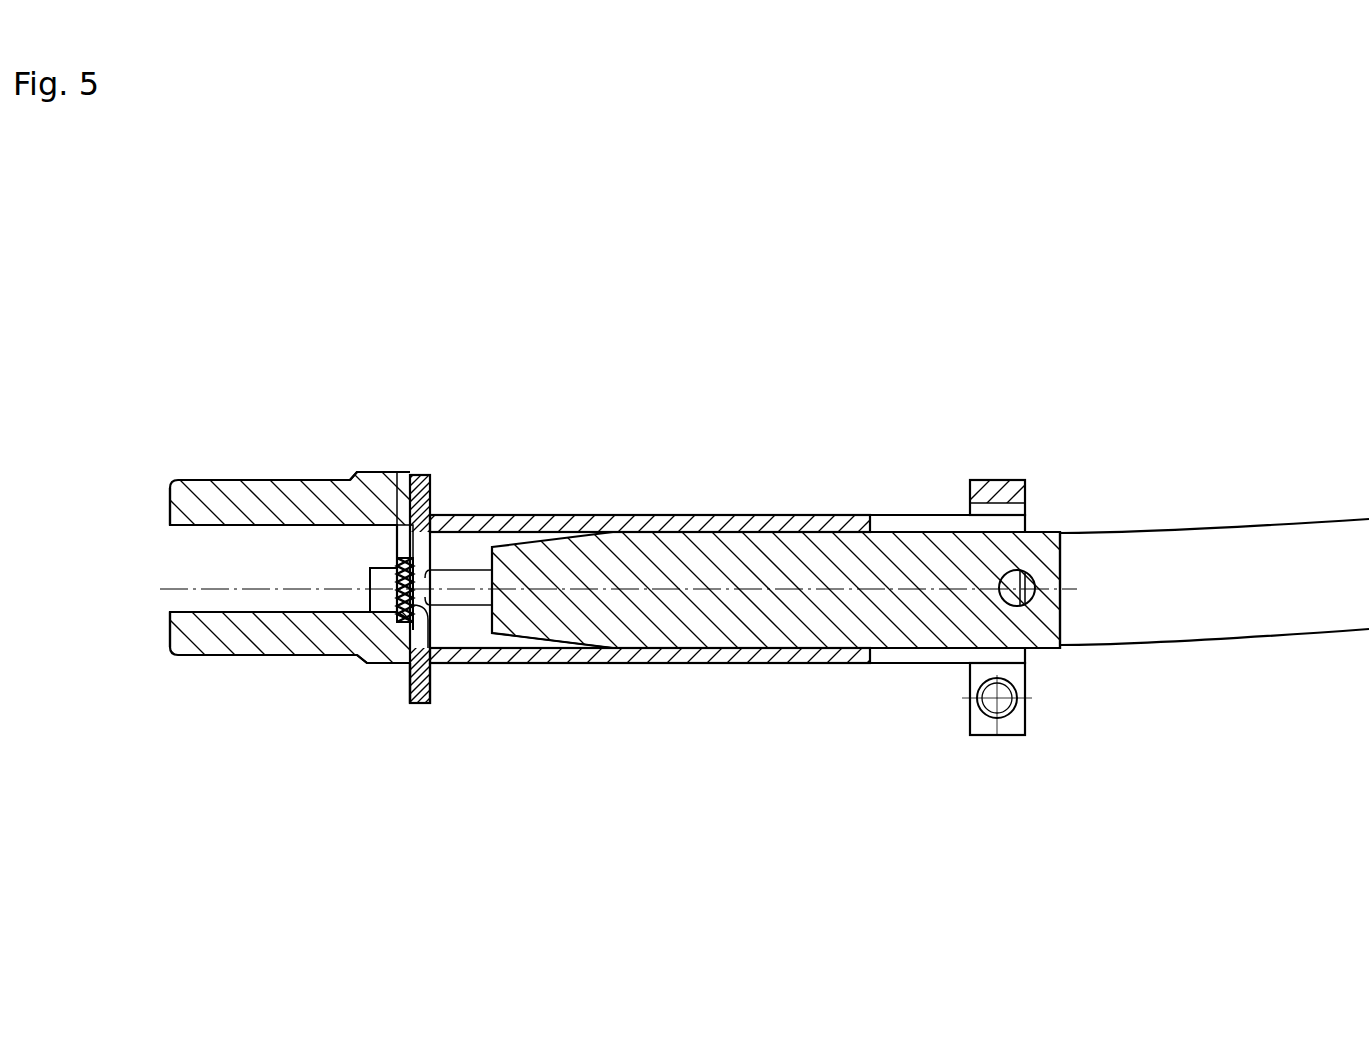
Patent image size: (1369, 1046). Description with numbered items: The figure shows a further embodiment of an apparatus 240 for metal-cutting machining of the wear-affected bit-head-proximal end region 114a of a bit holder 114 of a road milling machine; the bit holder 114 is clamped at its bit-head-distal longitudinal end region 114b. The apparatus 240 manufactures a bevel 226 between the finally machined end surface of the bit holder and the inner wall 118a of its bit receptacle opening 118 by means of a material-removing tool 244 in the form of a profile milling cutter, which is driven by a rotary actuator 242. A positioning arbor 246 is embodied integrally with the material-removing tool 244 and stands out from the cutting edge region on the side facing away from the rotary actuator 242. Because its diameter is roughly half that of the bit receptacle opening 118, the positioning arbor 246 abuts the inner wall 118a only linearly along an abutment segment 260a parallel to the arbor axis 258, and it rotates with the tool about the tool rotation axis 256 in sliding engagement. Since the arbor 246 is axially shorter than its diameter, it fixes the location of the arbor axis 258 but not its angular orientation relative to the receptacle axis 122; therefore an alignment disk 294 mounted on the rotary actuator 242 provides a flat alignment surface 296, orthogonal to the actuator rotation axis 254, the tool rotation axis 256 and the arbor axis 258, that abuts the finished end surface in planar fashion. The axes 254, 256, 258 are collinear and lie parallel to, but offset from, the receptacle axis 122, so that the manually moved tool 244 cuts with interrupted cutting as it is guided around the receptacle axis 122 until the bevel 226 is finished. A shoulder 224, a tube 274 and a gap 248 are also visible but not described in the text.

The bit holder 114 is at (280, 463).
The bit-head-proximal end region 114a is at (388, 683).
The bit-head-distal longitudinal end region 114b is at (160, 668).
The bit receptacle opening 118 is at (152, 537).
The inner wall 118a is at (203, 556).
The receptacle axis 122 is at (187, 570).
The shoulder 224 is at (388, 470).
The bevel 226 is at (417, 548).
The apparatus 240 is at (657, 355).
The rotary actuator 242 is at (882, 570).
The material-removing tool 244 is at (423, 632).
The positioning arbor 246 is at (380, 560).
The gap 248 is at (480, 622).
The actuator rotation axis 254 is at (746, 668).
The tool rotation axis 256 is at (782, 595).
The arbor axis 258 is at (368, 589).
The abutment segment 260a is at (392, 614).
The sleeve 274 is at (506, 520).
The alignment disk 294 is at (398, 683).
The alignment surface 296 is at (398, 683).